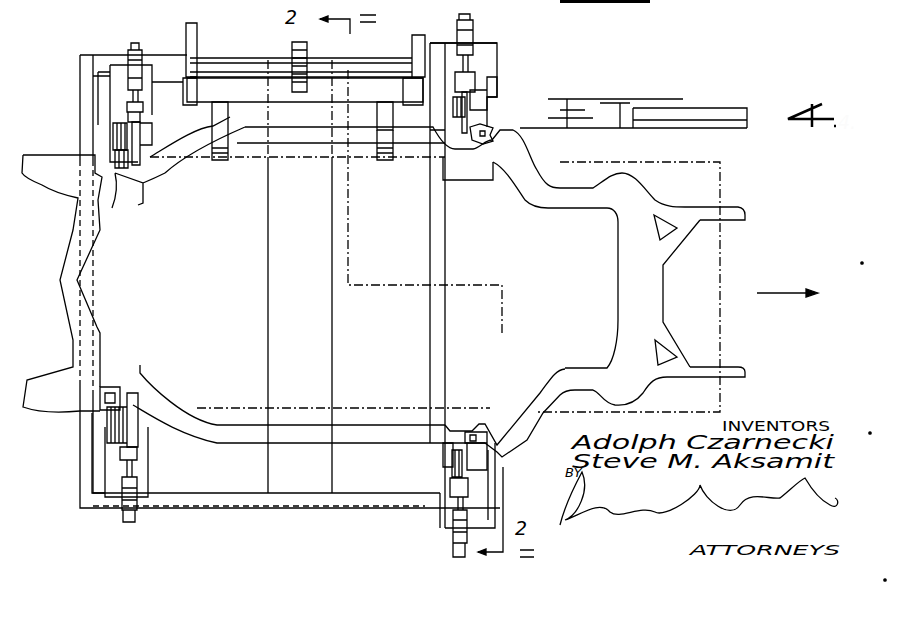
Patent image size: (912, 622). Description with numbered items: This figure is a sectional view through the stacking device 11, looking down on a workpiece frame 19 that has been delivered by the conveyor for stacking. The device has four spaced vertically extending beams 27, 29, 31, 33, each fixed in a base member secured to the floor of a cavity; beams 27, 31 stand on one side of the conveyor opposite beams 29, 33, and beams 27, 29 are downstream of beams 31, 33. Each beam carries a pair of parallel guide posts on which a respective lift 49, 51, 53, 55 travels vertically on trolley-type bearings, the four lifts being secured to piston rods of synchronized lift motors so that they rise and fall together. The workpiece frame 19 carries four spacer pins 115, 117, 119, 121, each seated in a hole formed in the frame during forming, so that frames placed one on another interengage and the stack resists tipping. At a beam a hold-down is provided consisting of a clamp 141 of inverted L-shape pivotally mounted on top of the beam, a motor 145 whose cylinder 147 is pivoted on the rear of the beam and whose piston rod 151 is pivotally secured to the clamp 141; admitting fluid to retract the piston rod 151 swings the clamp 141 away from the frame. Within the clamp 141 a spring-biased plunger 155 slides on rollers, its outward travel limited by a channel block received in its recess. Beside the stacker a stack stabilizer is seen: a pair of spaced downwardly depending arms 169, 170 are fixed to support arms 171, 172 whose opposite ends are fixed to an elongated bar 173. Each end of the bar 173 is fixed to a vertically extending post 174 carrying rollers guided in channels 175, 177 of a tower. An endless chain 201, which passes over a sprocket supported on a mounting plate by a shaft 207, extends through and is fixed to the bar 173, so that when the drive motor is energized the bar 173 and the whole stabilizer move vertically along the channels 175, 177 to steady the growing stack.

The stacking device 11 is at (429, 287).
The workpiece frame 19 is at (187, 403).
The vertically extending beam 27 is at (477, 495).
The vertically extending beam 29 is at (463, 85).
The vertically extending beam 31 is at (140, 463).
The vertically extending beam 33 is at (108, 97).
The lift 49 is at (493, 457).
The lift 51 is at (497, 98).
The lift 53 is at (100, 420).
The lift 55 is at (112, 137).
The pin 115 is at (482, 410).
The pin 117 is at (478, 158).
The pin 119 is at (113, 387).
The pin 121 is at (113, 206).
The clamp 141 is at (142, 132).
The motor 145 is at (127, 77).
The cylinder 147 is at (123, 75).
The piston rod 151 is at (133, 100).
The plunger 155 is at (112, 157).
The downwardly depending arm 169 is at (380, 160).
The downwardly depending arm 170 is at (155, 163).
The support arm 171 is at (373, 114).
The support arm 172 is at (230, 117).
The elongated bar 173 is at (320, 98).
The vertically extending post 174 is at (200, 87).
The channel 175 is at (341, 135).
The channel 177 is at (182, 84).
The endless chain 201 is at (300, 52).
The shaft 207 is at (370, 70).